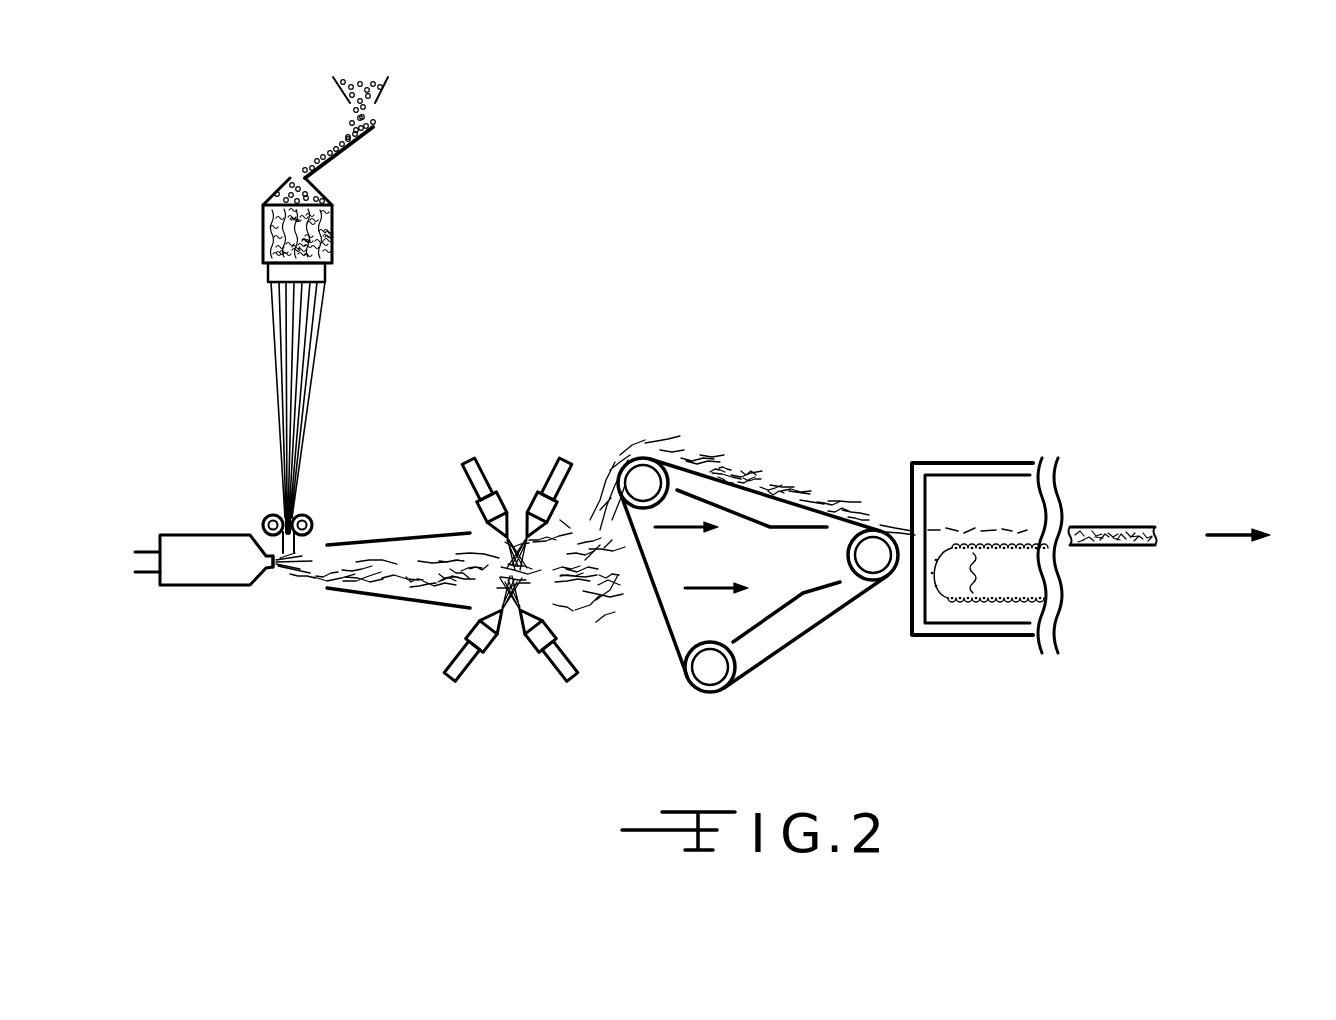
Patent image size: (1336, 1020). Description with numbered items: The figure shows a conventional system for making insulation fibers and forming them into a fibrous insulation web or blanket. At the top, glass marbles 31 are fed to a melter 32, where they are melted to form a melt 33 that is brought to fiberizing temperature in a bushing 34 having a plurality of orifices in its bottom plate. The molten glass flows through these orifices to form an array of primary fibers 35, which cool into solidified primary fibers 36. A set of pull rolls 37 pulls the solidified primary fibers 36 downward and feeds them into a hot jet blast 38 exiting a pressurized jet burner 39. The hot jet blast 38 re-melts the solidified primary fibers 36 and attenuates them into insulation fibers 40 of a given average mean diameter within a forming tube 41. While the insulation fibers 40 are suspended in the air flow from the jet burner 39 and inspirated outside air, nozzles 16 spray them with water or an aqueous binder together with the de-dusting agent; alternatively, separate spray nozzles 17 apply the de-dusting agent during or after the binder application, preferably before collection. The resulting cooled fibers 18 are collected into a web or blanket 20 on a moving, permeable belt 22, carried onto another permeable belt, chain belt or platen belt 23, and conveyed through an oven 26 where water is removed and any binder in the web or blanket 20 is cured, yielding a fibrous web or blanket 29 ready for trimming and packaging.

The nozzles 16 is at (493, 465).
The separate spray nozzles 17 is at (538, 464).
The cooled fibers 18 is at (575, 573).
The web or blanket 20 is at (868, 520).
The moving, permeable belt 22 is at (675, 663).
The permeable belt, chain belt or platen belt 23 is at (962, 598).
The oven 26 is at (972, 495).
The fibrous web or blanket 29 is at (1107, 527).
The glass marbles 31 is at (332, 148).
The melter 32 is at (263, 207).
The melt 33 is at (282, 242).
The bushing 34 is at (278, 277).
The primary fibers 35 is at (317, 370).
The solidified primary fibers 36 is at (300, 474).
The pull rolls 37 is at (322, 513).
The hot jet blast 38 is at (275, 582).
The pressurized jet burner 39 is at (215, 533).
The insulation fibers 40 is at (300, 585).
The forming tube 41 is at (388, 610).